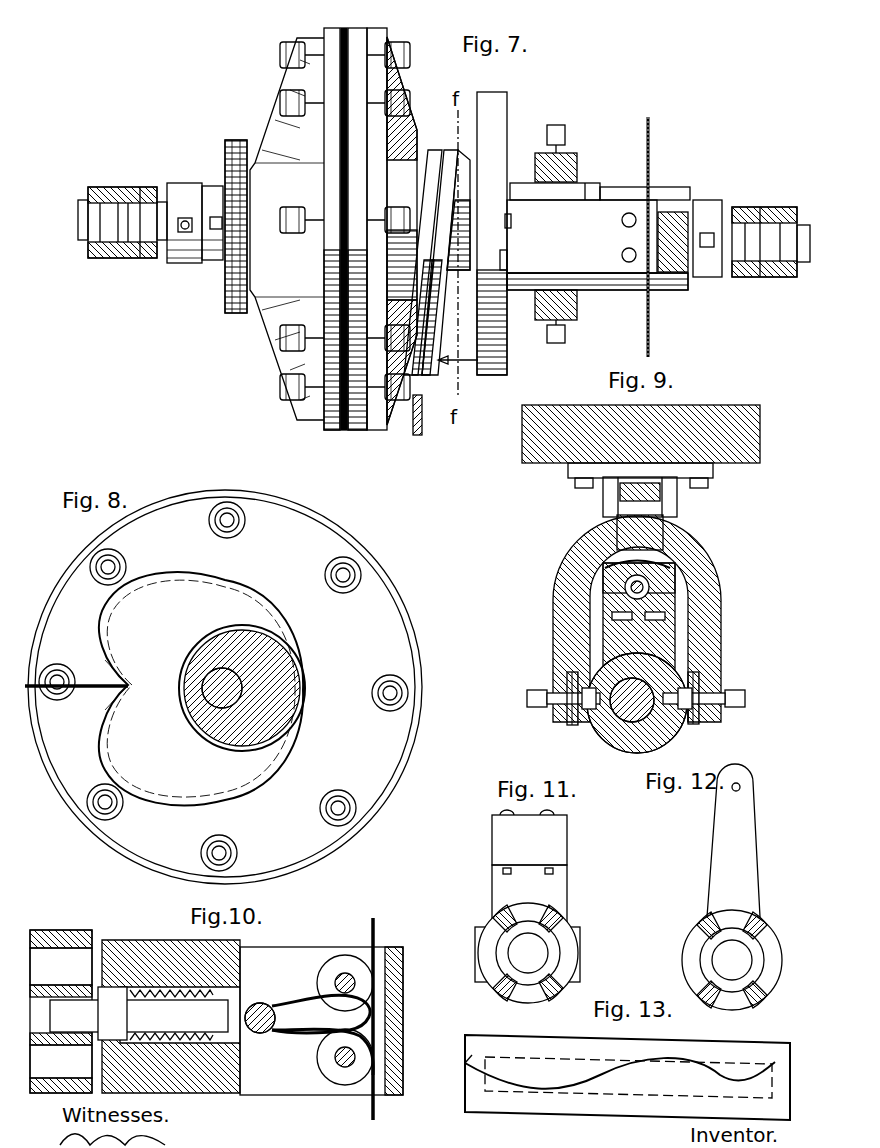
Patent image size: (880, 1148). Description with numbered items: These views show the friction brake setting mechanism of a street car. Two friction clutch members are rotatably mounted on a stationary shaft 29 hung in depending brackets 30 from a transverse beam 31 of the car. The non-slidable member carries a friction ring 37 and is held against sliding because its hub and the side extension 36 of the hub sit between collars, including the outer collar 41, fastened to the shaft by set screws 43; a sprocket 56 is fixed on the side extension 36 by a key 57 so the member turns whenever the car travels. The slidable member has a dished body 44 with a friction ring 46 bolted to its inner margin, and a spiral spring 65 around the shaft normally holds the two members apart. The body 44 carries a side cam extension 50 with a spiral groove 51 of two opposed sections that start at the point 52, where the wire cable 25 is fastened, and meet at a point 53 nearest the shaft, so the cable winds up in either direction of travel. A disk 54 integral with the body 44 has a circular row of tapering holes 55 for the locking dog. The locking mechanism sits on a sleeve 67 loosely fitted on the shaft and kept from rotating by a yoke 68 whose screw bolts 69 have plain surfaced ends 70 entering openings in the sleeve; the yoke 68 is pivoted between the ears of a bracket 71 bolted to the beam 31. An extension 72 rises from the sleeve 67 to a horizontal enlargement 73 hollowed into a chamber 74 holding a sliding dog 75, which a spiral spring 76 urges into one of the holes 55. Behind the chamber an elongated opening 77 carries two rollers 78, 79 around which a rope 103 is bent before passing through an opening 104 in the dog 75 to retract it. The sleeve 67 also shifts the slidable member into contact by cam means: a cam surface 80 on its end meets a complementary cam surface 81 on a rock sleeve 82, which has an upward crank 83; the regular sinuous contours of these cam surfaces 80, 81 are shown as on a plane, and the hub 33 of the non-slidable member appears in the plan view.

In FIG. 7, the wire cable 25 is at (418, 436).
In FIG. 8, the wire cable 25 is at (90, 692).
In FIG. 7, the stationary shaft 29 is at (162, 202).
In FIG. 8, the stationary shaft 29 is at (210, 683).
In FIG. 9, the stationary shaft 29 is at (622, 722).
In FIG. 7, the depending brackets 30 is at (134, 188).
In FIG. 9, the transverse beam 31 is at (735, 420).
In FIG. 7, the hub 33 is at (287, 229).
In FIG. 7, the side extension 36 is at (208, 186).
In FIG. 7, the friction ring 37 is at (331, 431).
In FIG. 7, the outer collar 41 is at (184, 223).
In FIG. 7, the set screws 43 is at (185, 232).
In FIG. 7, the dished body 44 is at (393, 229).
In FIG. 8, the dished body 44 is at (223, 686).
In FIG. 7, the friction ring 46 is at (359, 431).
In FIG. 8, the friction ring 46 is at (416, 634).
In FIG. 7, the cam extension 50 is at (416, 378).
In FIG. 8, the cam extension 50 is at (201, 688).
In FIG. 7, the spiral groove 51 is at (445, 152).
In FIG. 8, the spiral groove 51 is at (268, 606).
In FIG. 8, the point 52 is at (120, 680).
In FIG. 7, the point 53 is at (507, 262).
In FIG. 8, the point 53 is at (225, 688).
In FIG. 7, the disk 54 is at (507, 101).
In FIG. 10, the disk 54 is at (60, 930).
In FIG. 10, the tapering holes 55 is at (61, 1016).
In FIG. 7, the sprocket 56 is at (238, 140).
In FIG. 7, the key 57 is at (216, 229).
In FIG. 7, the spiral spring 65 is at (341, 207).
In FIG. 7, the sleeve 67 is at (588, 192).
In FIG. 9, the sleeve 67 is at (672, 728).
In FIG. 11, the sleeve 67 is at (570, 930).
In FIG. 13, the sleeve 67 is at (628, 1069).
In FIG. 7, the yoke 68 is at (570, 162).
In FIG. 9, the yoke 68 is at (700, 648).
In FIG. 7, the screw bolts 69 is at (505, 350).
In FIG. 9, the screw bolts 69 is at (644, 698).
In FIG. 9, the plain surfaced ends 70 is at (690, 695).
In FIG. 9, the bracket 71 is at (680, 505).
In FIG. 7, the extension 72 is at (526, 190).
In FIG. 9, the extension 72 is at (610, 637).
In FIG. 11, the extension 72 is at (529, 894).
In FIG. 7, the horizontal enlargement 73 is at (582, 236).
In FIG. 9, the horizontal enlargement 73 is at (603, 575).
In FIG. 10, the horizontal enlargement 73 is at (165, 952).
In FIG. 11, the horizontal enlargement 73 is at (529, 837).
In FIG. 9, the chamber 74 is at (625, 600).
In FIG. 10, the chamber 74 is at (213, 1040).
In FIG. 7, the dog 75 is at (508, 221).
In FIG. 9, the dog 75 is at (685, 565).
In FIG. 10, the dog 75 is at (139, 1013).
In FIG. 9, the spiral spring 76 is at (650, 588).
In FIG. 10, the spiral spring 76 is at (215, 988).
In FIG. 10, the elongated opening 77 is at (327, 1057).
In FIG. 10, the roller 78 is at (345, 955).
In FIG. 10, the roller 79 is at (343, 1080).
In FIG. 7, the cam surface 80 is at (587, 192).
In FIG. 11, the cam surface 80 is at (480, 948).
In FIG. 13, the cam surface 80 is at (775, 1062).
In FIG. 7, the cam surface 81 is at (605, 290).
In FIG. 12, the cam surface 81 is at (695, 956).
In FIG. 13, the cam surface 81 is at (468, 1066).
In FIG. 7, the rock sleeve 82 is at (660, 205).
In FIG. 12, the rock sleeve 82 is at (783, 956).
In FIG. 13, the rock sleeve 82 is at (627, 1077).
In FIG. 7, the crank 83 is at (695, 278).
In FIG. 12, the crank 83 is at (733, 840).
In FIG. 7, the rope 103 is at (652, 135).
In FIG. 10, the rope 103 is at (377, 920).
In FIG. 10, the opening 104 is at (268, 1003).